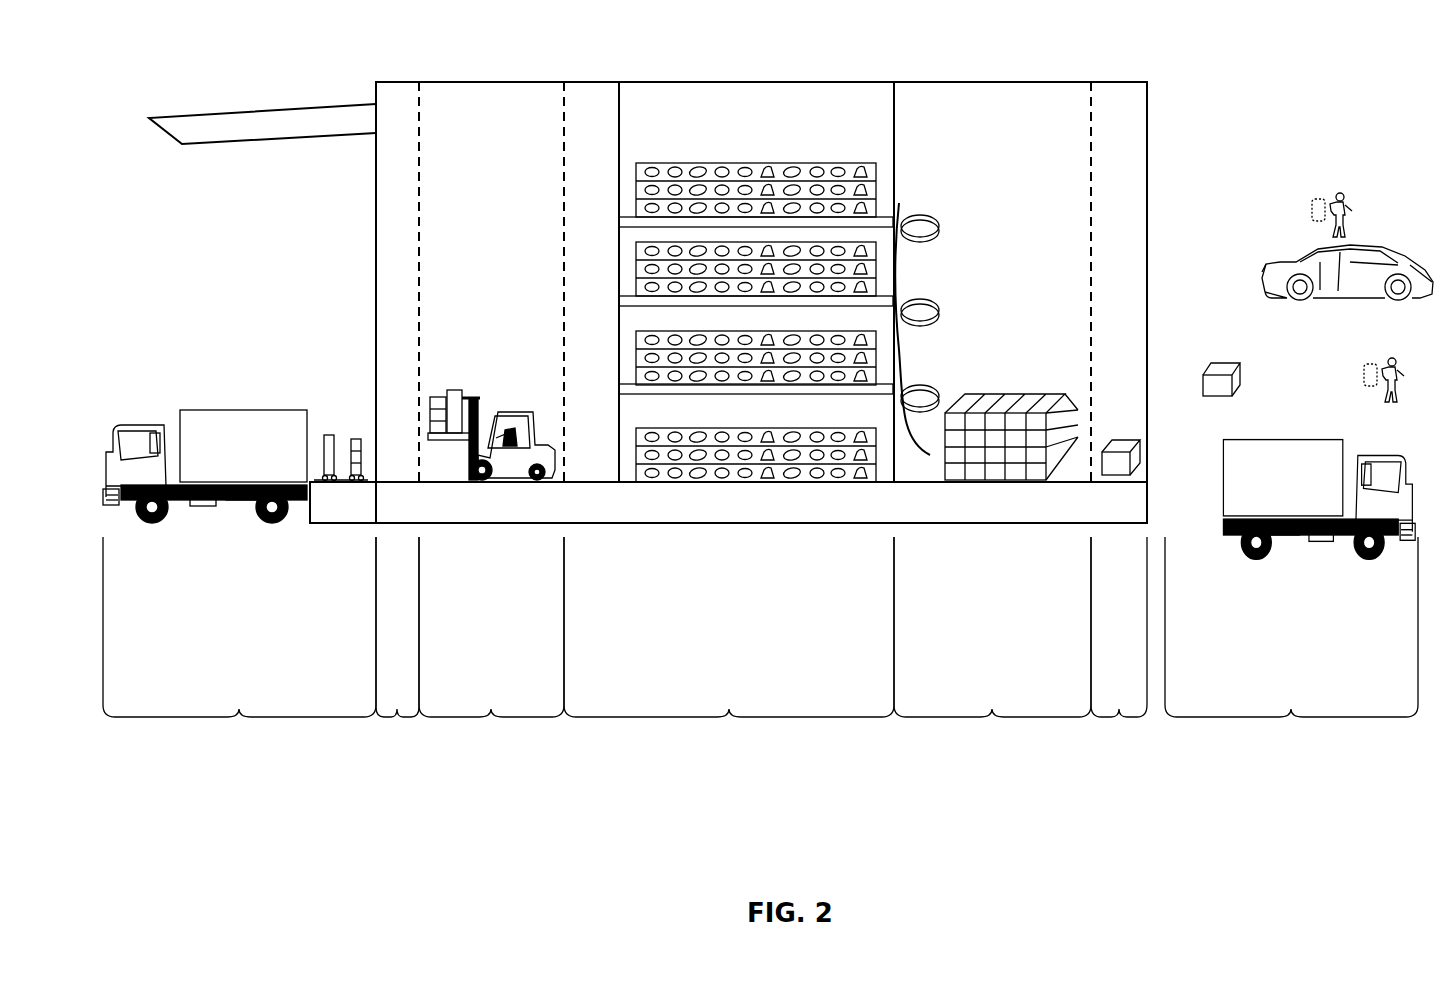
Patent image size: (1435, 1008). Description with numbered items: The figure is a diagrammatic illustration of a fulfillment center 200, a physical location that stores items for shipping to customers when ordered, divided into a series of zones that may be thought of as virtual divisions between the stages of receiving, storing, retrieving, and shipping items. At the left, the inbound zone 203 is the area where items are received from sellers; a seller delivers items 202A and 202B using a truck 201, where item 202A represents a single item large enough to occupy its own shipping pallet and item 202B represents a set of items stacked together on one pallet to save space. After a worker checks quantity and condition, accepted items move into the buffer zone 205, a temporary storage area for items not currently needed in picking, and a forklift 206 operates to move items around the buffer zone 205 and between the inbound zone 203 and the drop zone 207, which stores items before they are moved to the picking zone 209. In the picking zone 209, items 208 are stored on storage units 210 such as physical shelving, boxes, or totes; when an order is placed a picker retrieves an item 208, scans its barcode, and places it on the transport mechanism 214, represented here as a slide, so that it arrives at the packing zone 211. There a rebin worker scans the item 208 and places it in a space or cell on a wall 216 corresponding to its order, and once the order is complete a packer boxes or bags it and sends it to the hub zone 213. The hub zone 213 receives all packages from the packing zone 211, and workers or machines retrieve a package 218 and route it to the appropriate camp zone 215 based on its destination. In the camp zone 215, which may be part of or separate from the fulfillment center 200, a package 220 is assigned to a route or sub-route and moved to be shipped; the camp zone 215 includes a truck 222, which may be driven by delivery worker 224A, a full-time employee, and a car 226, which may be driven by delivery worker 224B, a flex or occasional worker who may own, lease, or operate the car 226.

The fulfillment center 200 is at (901, 24).
The truck 201 is at (229, 409).
The item 202A is at (329, 434).
The item 202B is at (346, 438).
The inbound zone 203 is at (239, 711).
The buffer zone 205 is at (397, 711).
The forklift 206 is at (514, 410).
The drop zone 207 is at (491, 711).
The items 208 is at (652, 166).
The picking zone 209 is at (729, 711).
The storage units 210 is at (818, 163).
The packing zone 211 is at (992, 711).
The hub zone 213 is at (1119, 711).
The transport mechanism 214 is at (926, 219).
The camp zone 215 is at (1291, 711).
The wall 216 is at (1006, 394).
The package 218 is at (1118, 441).
The package 220 is at (1217, 363).
The truck 222 is at (1285, 451).
The delivery worker 224A is at (1385, 404).
The delivery worker 224B is at (1353, 210).
The car 226 is at (1360, 246).